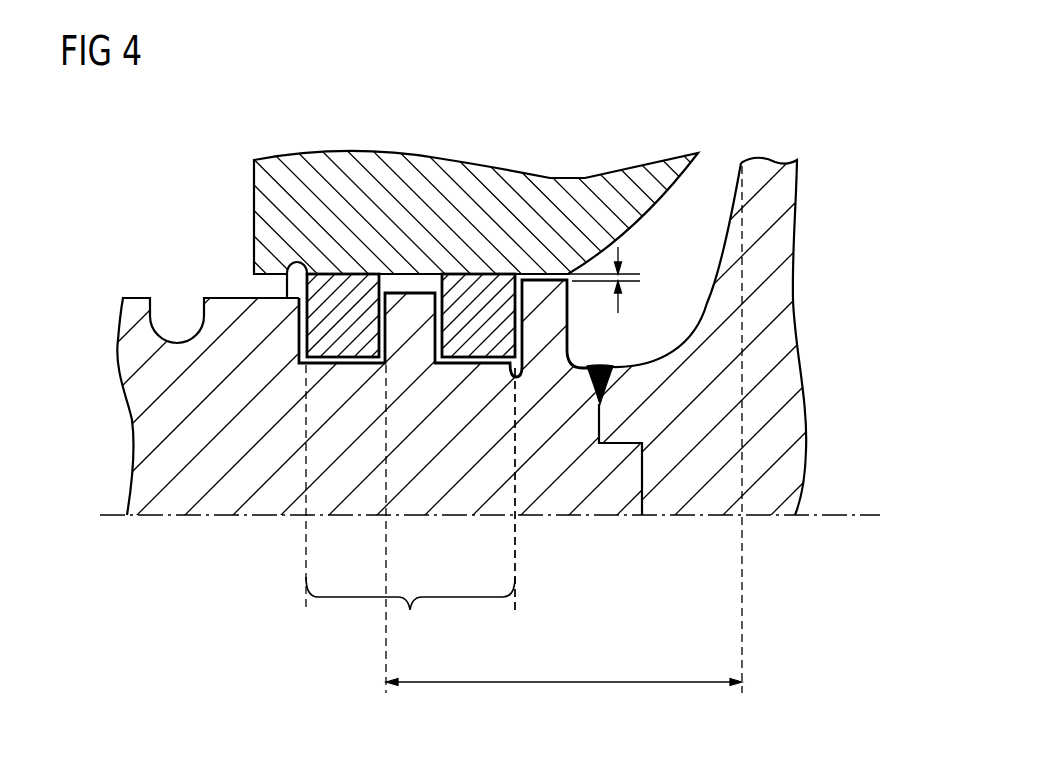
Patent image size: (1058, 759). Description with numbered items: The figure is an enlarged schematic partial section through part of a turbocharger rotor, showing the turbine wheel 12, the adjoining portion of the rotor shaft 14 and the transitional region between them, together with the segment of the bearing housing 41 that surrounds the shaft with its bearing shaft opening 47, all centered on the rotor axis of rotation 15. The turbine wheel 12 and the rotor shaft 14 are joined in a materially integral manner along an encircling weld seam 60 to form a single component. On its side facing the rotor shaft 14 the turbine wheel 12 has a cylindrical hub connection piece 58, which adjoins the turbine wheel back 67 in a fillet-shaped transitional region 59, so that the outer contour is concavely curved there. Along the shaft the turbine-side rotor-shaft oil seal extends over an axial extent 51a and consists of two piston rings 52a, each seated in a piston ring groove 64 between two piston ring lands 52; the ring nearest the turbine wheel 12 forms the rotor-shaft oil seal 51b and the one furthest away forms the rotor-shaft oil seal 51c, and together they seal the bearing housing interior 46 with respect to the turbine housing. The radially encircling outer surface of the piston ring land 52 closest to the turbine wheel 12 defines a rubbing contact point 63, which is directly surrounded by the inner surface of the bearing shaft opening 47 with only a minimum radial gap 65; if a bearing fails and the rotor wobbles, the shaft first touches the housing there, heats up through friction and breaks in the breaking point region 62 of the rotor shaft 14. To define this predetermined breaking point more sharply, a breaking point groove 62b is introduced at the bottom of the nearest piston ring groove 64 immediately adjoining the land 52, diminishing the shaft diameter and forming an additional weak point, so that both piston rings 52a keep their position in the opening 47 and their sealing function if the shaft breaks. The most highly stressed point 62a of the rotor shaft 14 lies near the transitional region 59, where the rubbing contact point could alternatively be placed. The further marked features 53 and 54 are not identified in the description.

The turbine wheel 12 is at (777, 283).
The rotor shaft 14 is at (181, 495).
The rotor axis of rotation 15 is at (868, 515).
The bearing housing 41 is at (600, 205).
The bearing housing interior 46 is at (184, 220).
The bearing shaft opening 47 is at (410, 273).
The axial extent 51a is at (410, 529).
The rotor-shaft oil seal closest to the turbine wheel 51b is at (455, 255).
The rotor-shaft oil seal furthest from the turbine wheel 51c is at (333, 305).
The piston ring land 52 is at (288, 325).
The piston ring 52a is at (345, 255).
The boundary line 53 is at (305, 504).
The boundary line 54 is at (514, 506).
The hub connection piece 58 is at (617, 410).
The transitional region 59 is at (697, 306).
The weld seam 60 is at (610, 382).
The breaking point region 62 is at (605, 680).
The most highly stressed point 62a is at (672, 372).
The breaking point groove 62b is at (518, 370).
The rubbing contact point 63 is at (543, 278).
The piston ring groove 64 is at (342, 350).
The minimum radial gap 65 is at (627, 275).
The turbine wheel back 67 is at (731, 189).